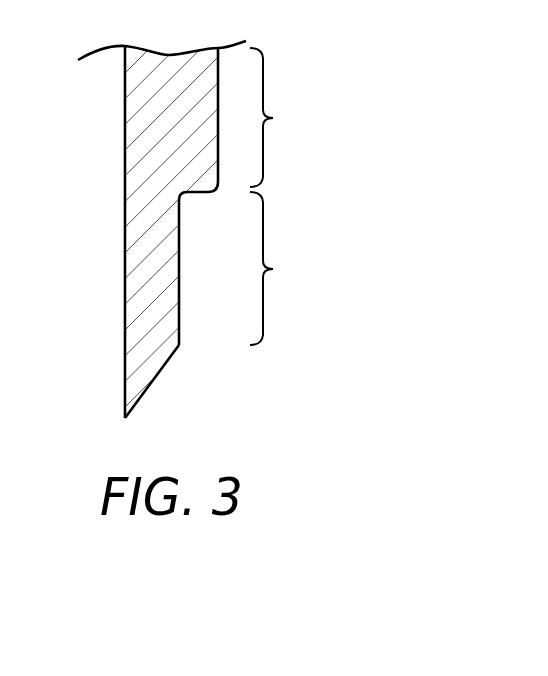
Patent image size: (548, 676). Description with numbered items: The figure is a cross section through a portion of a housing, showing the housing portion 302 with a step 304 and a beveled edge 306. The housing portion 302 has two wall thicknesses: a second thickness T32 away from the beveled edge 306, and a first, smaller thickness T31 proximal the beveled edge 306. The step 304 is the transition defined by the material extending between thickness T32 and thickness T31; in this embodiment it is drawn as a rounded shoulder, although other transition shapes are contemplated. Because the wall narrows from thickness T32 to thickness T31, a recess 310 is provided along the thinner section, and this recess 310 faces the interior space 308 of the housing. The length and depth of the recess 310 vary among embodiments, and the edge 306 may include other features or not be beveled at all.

The housing portion 302 is at (127, 106).
The step 304 is at (203, 193).
The beveled edge 306 is at (153, 385).
The interior space 308 is at (313, 190).
The recess 310 is at (181, 271).
The thickness T32 is at (281, 117).
The thickness T31 is at (281, 268).